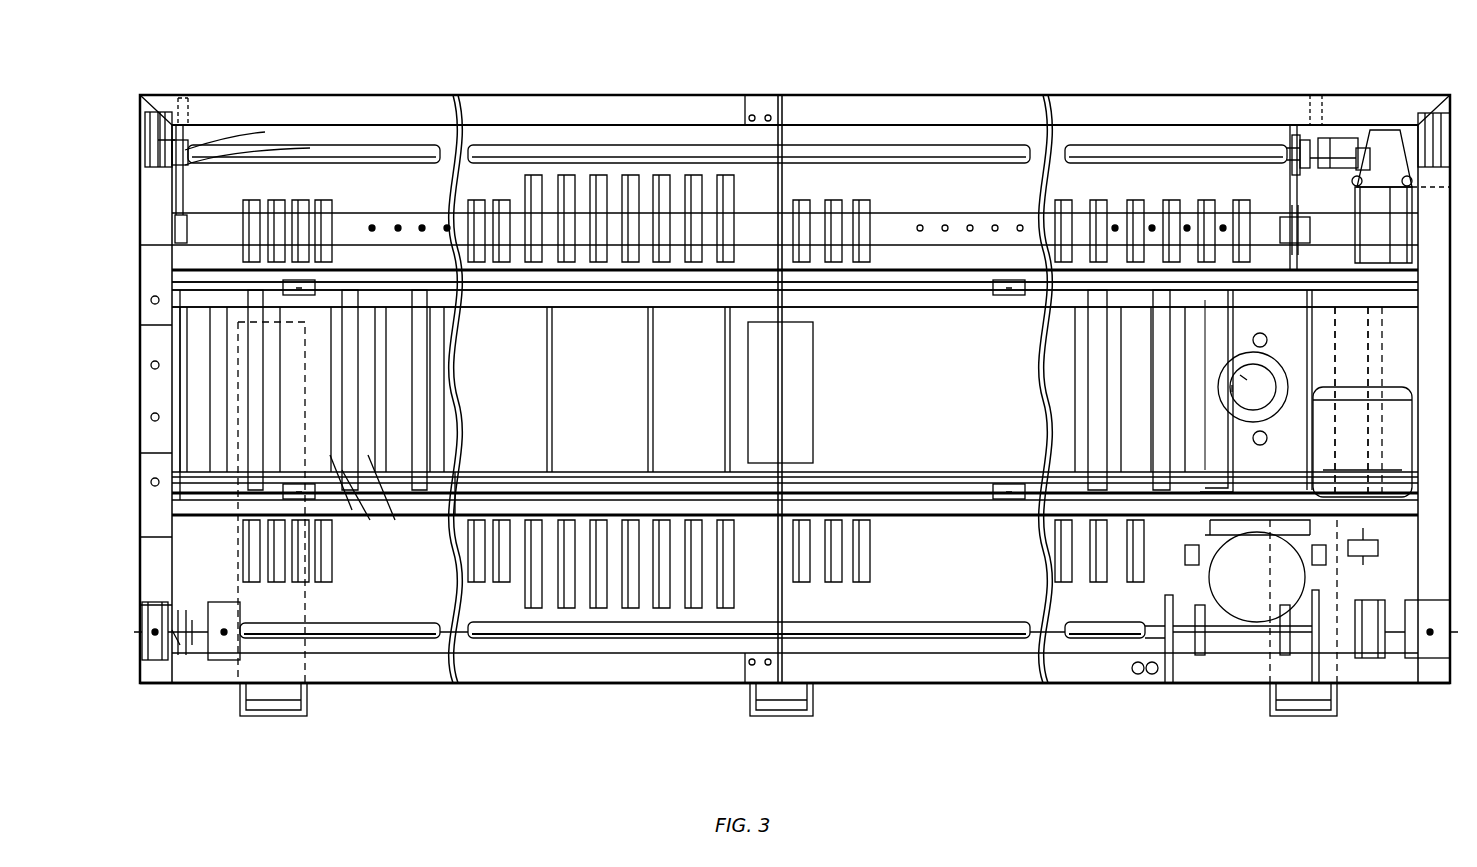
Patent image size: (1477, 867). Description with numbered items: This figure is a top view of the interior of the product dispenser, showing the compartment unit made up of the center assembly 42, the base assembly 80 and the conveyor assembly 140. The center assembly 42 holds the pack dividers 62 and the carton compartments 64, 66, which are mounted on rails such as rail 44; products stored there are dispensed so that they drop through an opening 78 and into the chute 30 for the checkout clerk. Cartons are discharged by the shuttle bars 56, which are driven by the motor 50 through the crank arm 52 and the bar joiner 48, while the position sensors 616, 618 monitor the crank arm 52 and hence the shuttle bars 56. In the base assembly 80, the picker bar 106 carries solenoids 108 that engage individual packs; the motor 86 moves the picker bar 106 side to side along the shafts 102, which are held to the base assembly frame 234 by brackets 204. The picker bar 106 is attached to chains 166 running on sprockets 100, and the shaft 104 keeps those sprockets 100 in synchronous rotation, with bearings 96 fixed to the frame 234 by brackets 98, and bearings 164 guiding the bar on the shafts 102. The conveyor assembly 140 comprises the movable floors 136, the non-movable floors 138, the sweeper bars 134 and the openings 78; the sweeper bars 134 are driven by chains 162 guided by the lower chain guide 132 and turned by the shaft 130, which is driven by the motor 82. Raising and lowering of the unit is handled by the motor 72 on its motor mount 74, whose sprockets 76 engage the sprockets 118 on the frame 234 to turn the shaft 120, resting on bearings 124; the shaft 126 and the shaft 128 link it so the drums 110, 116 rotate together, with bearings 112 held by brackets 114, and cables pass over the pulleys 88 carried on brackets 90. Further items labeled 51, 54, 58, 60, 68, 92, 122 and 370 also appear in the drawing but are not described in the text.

The chute 30 is at (305, 712).
The center assembly 42 is at (140, 205).
The rail 44 is at (700, 510).
The bar joiner 48 is at (1230, 440).
The motor 50 is at (1235, 385).
The bracket arm 51 is at (1225, 298).
The crank arm 52 is at (830, 210).
The clamp 54 is at (1000, 295).
The shuttle bars 56 is at (705, 295).
The post 58 is at (780, 95).
The post 60 is at (745, 95).
The pack dividers 62 is at (568, 610).
The carton compartment 64 is at (372, 460).
The carton compartment 66 is at (345, 470).
The arm 68 is at (365, 505).
The motor 72 is at (1220, 577).
The motor mount 74 is at (1215, 533).
The sprockets 76 is at (1188, 560).
The opening 78 is at (800, 360).
The base assembly 80 is at (140, 672).
The motor 82 is at (1408, 400).
The motor 86 is at (1365, 210).
The pulleys 88 is at (175, 128).
The brackets 90 is at (148, 125).
The pulley 92 is at (1385, 125).
The bearings 96 is at (1340, 125).
The brackets 98 is at (1322, 100).
The sprockets 100 is at (255, 152).
The shafts 102 is at (290, 150).
The shaft 104 is at (325, 150).
The picker bar 106 is at (348, 225).
The solenoids 108 is at (420, 222).
The drums 110 is at (165, 665).
The bearings 112 is at (178, 668).
The brackets 114 is at (222, 668).
The drums 116 is at (240, 668).
The sprockets 118 is at (1170, 665).
The shaft 120 is at (1228, 645).
The holes 122 is at (1145, 676).
The bearings 124 is at (1130, 640).
The shaft 126 is at (512, 640).
The shaft 128 is at (310, 632).
The shaft 130 is at (1370, 320).
The lower chain guide 132 is at (482, 485).
The sweeper bars 134 is at (648, 440).
The floors 136 is at (578, 358).
The floors 138 is at (228, 415).
The conveyor assembly 140 is at (965, 690).
The chains 162 is at (522, 472).
The bearings 164 is at (190, 215).
The chains 166 is at (195, 210).
The brackets 204 is at (190, 128).
The base assembly frame 234 is at (145, 198).
The guard 370 is at (1290, 140).
The position sensor 616 is at (1267, 338).
The position sensor 618 is at (1215, 520).